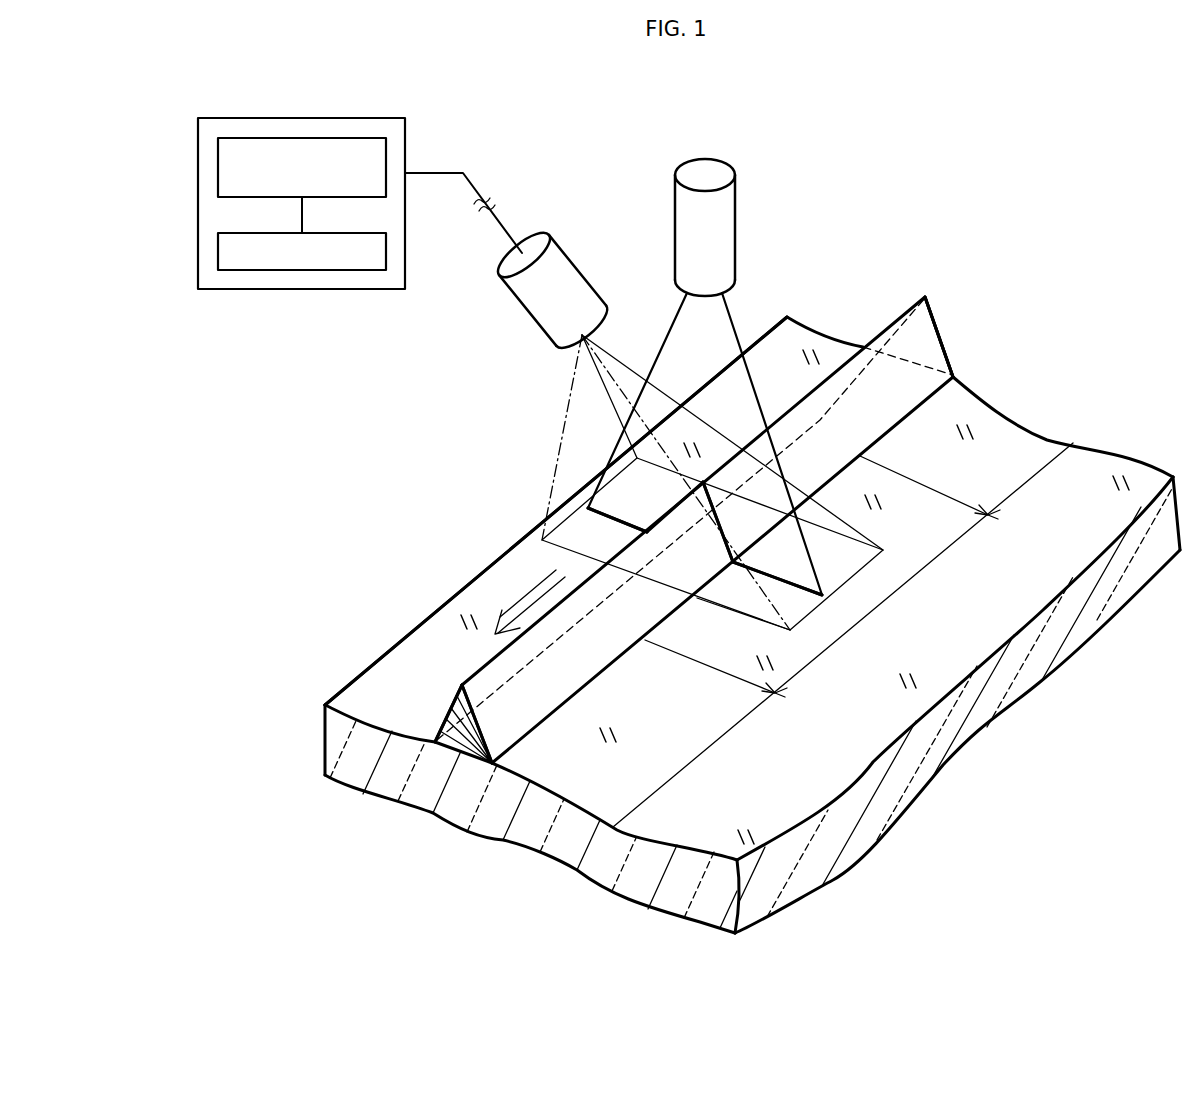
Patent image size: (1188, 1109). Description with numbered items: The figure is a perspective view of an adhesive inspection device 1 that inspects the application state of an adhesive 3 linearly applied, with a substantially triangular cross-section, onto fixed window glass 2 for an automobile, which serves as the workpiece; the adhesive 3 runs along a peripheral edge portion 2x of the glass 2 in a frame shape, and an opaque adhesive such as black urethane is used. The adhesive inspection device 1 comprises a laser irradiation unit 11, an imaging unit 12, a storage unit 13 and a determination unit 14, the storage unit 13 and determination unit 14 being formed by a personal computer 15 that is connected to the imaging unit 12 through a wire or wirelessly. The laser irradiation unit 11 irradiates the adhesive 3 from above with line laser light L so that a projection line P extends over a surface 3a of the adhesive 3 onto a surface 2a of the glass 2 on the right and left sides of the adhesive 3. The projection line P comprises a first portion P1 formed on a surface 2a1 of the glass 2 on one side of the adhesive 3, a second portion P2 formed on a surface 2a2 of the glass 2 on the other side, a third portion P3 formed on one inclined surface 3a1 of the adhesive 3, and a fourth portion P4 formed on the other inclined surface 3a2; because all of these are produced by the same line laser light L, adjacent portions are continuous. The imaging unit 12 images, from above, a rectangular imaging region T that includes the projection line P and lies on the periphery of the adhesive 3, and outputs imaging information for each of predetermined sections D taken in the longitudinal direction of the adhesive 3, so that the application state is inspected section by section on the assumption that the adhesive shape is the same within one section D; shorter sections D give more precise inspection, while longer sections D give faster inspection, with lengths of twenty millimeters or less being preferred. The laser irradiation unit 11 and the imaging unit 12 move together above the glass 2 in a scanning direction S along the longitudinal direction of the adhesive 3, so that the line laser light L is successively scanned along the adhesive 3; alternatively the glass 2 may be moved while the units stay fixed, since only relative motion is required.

The adhesive inspection device 1 is at (611, 160).
The fixed window glass 2 is at (1091, 470).
The surface of the glass 2a is at (357, 884).
The surface of the glass on one side 2a1 is at (567, 767).
The surface of the glass on the other side 2a2 is at (423, 700).
The peripheral edge portion 2x is at (400, 643).
The adhesive 3 is at (566, 670).
The surface of the adhesive 3a is at (870, 226).
The one inclined surface of the adhesive 3a1 is at (898, 377).
The other inclined surface of the adhesive 3a2 is at (850, 372).
The laser irradiation unit 11 is at (722, 232).
The imaging unit 12 is at (563, 280).
The storage unit 13 is at (218, 252).
The determination unit 14 is at (218, 168).
The personal computer 15 is at (307, 118).
The line laser light L is at (730, 318).
The scanning direction S is at (520, 603).
The imaging region T is at (719, 606).
The predetermined section D is at (1020, 488).
The projection line P is at (793, 582).
The first portion P1 is at (792, 583).
The second portion P2 is at (622, 524).
The third portion P3 is at (718, 520).
The fourth portion P4 is at (688, 521).